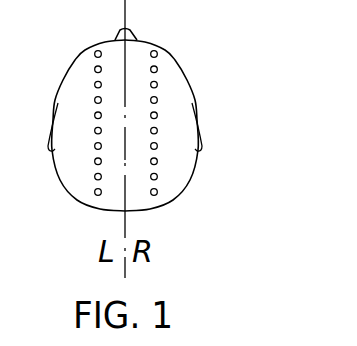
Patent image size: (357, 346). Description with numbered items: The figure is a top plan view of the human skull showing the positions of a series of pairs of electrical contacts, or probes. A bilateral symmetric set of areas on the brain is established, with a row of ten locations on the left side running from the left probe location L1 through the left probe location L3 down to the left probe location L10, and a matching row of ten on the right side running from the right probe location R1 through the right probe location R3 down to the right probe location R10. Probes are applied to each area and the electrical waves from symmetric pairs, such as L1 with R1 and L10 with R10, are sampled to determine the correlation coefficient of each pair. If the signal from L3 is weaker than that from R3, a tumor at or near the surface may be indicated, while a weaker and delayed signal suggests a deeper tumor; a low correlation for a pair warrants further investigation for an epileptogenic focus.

The left probe location 1 L1 is at (95, 52).
The left probe location 3 L3 is at (94, 84).
The left probe location 10 L10 is at (96, 194).
The right probe location 1 R1 is at (157, 53).
The right probe location 3 R3 is at (158, 86).
The right probe location 10 R10 is at (157, 193).